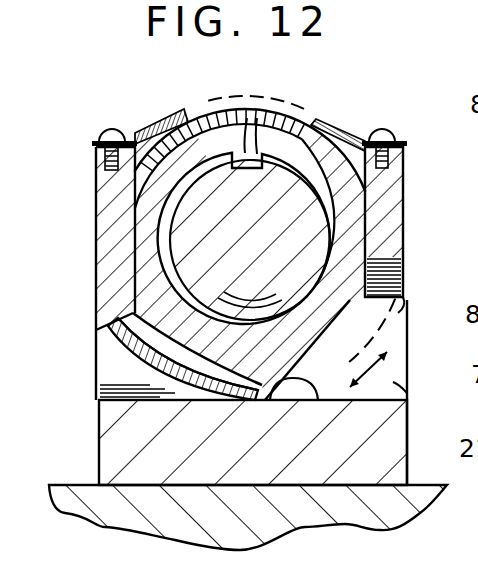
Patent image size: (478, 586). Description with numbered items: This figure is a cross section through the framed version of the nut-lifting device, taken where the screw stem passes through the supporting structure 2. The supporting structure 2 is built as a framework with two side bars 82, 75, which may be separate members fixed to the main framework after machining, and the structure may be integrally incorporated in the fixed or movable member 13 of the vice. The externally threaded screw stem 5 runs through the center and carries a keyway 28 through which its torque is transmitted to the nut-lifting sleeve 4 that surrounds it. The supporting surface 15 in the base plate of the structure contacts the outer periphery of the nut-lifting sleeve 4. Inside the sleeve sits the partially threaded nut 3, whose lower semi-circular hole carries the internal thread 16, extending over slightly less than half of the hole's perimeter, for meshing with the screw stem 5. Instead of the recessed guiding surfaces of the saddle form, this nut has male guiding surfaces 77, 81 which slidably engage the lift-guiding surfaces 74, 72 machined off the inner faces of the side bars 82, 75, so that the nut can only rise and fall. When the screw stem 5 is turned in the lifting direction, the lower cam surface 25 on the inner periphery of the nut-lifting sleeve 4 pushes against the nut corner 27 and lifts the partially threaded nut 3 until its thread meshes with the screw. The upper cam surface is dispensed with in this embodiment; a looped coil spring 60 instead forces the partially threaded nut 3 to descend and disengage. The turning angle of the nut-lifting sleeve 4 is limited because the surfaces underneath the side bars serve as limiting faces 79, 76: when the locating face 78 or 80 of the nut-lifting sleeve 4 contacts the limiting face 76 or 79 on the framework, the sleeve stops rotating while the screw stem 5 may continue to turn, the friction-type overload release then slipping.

The supporting structure 2 is at (407, 399).
The partially threaded nut 3 is at (178, 116).
The nut-lifting sleeve 4 is at (182, 400).
The screw stem 5 is at (233, 326).
The fixed (or movable) member of the vice 13 is at (127, 524).
The supporting surface 15 is at (265, 400).
The internal thread 16 is at (262, 292).
The lifting cam surface 25 is at (184, 268).
The nut corner 27 is at (200, 398).
The keyway 28 is at (249, 120).
The looped coil spring 60 is at (305, 120).
The guiding surface 72 is at (98, 190).
The guiding surface 74 is at (397, 194).
The side bar 75 is at (403, 233).
The limiting face 76 is at (404, 302).
The male guiding surface 77 is at (357, 229).
The locating face 78 is at (318, 400).
The limiting face 79 is at (100, 338).
The locating face 80 is at (99, 305).
The male guiding surface 81 is at (212, 240).
The side bar 82 is at (97, 243).